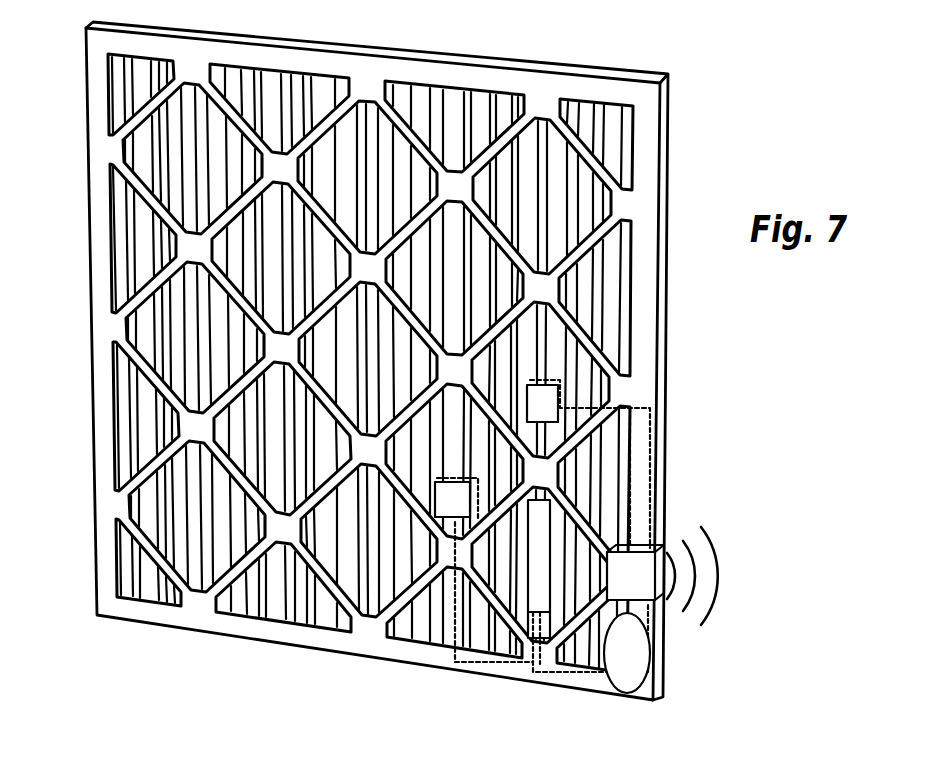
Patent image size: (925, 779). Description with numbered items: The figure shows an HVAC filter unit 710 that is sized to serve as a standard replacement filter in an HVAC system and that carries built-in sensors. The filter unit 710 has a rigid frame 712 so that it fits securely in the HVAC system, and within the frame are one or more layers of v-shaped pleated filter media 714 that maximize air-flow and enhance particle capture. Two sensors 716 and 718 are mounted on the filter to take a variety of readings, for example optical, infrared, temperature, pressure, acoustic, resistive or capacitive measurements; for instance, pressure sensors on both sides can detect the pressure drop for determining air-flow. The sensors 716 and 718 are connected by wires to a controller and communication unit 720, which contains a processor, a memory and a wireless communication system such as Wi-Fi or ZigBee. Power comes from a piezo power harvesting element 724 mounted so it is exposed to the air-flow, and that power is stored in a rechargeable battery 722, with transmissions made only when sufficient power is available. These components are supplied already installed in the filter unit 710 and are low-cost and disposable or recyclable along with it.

The filter unit 710 is at (398, 390).
The rigid frame 712 is at (200, 627).
The v-shaped pleated filter media 714 is at (152, 420).
The sensor 716 is at (447, 507).
The sensor 718 is at (542, 393).
The controller and communication unit 720 is at (653, 587).
The rechargeable battery 722 is at (623, 676).
The piezo power harvesting element 724 is at (541, 597).